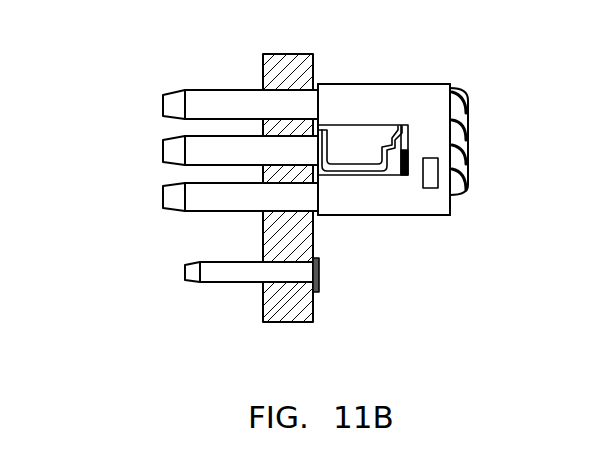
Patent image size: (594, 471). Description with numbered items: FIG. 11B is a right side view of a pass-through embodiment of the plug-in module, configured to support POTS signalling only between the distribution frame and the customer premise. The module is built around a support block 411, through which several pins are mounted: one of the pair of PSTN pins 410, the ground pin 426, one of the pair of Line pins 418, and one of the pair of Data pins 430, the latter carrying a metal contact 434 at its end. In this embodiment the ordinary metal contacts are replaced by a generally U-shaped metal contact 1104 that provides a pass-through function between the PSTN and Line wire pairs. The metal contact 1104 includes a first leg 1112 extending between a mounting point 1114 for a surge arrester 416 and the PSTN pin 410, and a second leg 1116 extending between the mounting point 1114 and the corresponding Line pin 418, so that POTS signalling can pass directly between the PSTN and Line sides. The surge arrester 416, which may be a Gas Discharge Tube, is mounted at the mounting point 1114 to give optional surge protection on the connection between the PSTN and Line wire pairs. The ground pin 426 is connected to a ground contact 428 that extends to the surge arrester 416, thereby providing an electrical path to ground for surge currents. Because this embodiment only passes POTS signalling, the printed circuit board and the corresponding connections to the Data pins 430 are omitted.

The support block 411 is at (288, 54).
The PSTN pins 410 is at (161, 103).
The ground pin 426 is at (163, 153).
The Line pins 418 is at (161, 198).
The Data pins 430 is at (182, 272).
The metal contact 434 is at (320, 272).
The U-shaped metal contact 1104 is at (405, 114).
The first leg 1112 is at (392, 82).
The second leg 1116 is at (383, 219).
The surge arrestor 416 is at (462, 112).
The mounting point 1114 is at (433, 179).
The ground contact 428 is at (368, 173).